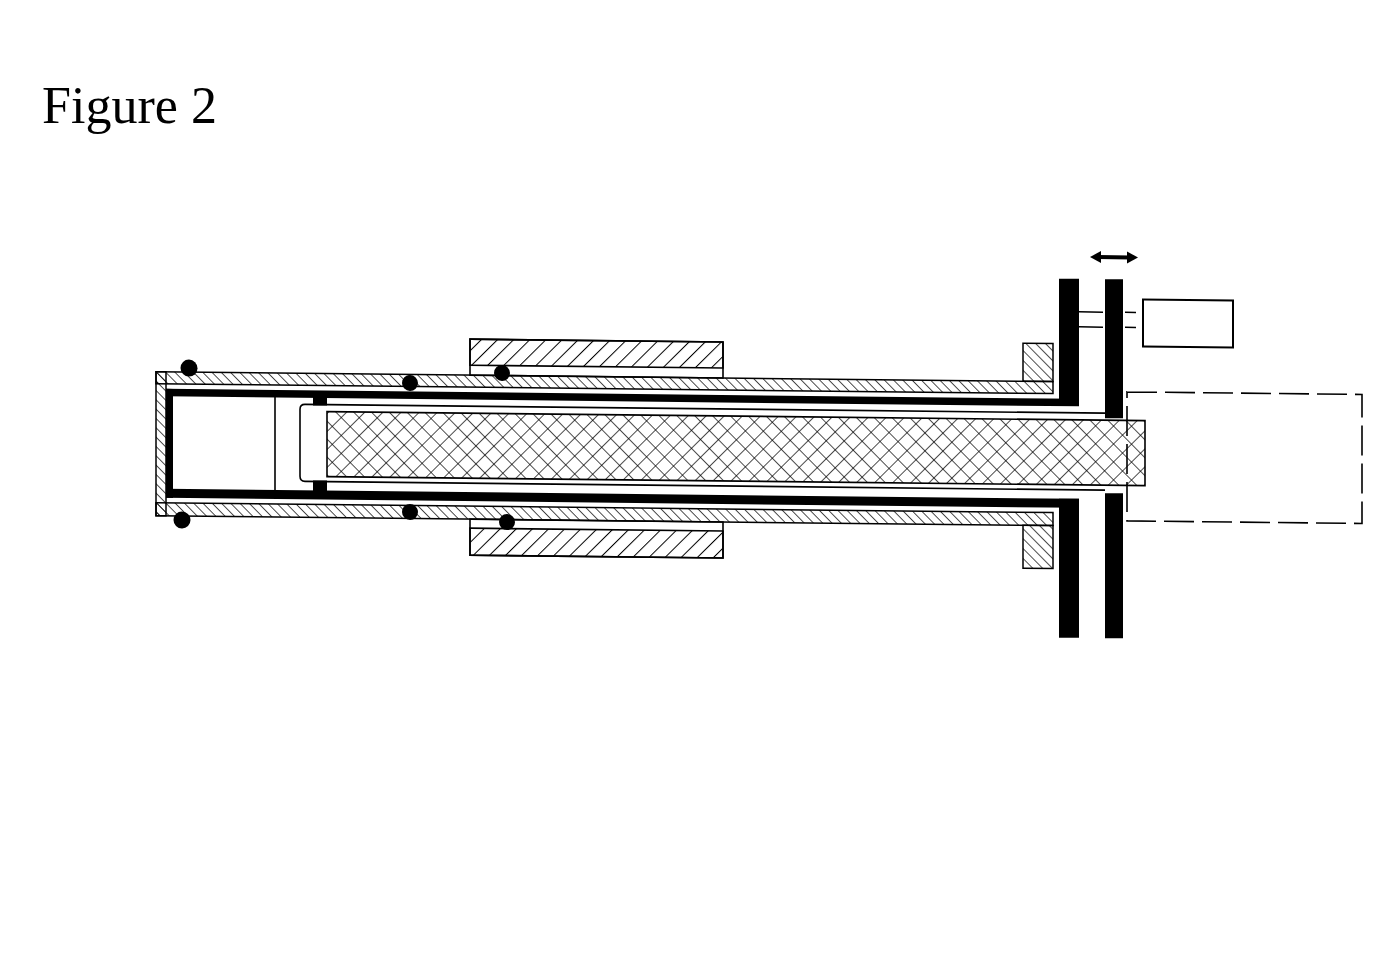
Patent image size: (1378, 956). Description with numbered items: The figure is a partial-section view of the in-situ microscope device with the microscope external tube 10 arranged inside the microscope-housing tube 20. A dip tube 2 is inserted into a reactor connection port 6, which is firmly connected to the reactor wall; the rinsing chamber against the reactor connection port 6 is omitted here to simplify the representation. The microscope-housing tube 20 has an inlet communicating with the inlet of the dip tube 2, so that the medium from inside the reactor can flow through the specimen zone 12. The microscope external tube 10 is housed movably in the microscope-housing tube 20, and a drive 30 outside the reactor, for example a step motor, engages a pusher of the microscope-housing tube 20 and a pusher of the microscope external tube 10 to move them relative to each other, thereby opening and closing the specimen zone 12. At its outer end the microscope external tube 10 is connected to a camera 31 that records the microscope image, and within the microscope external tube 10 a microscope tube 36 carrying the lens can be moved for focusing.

The dip tube 2 is at (308, 524).
The reactor connection port 6 is at (567, 551).
The microscope external tube 10 is at (856, 489).
The specimen zone 12 is at (282, 418).
The microscope-housing tube 20 is at (779, 511).
The drive 30 is at (1190, 287).
The camera 31 is at (1232, 472).
The microscope tube 36 is at (907, 416).